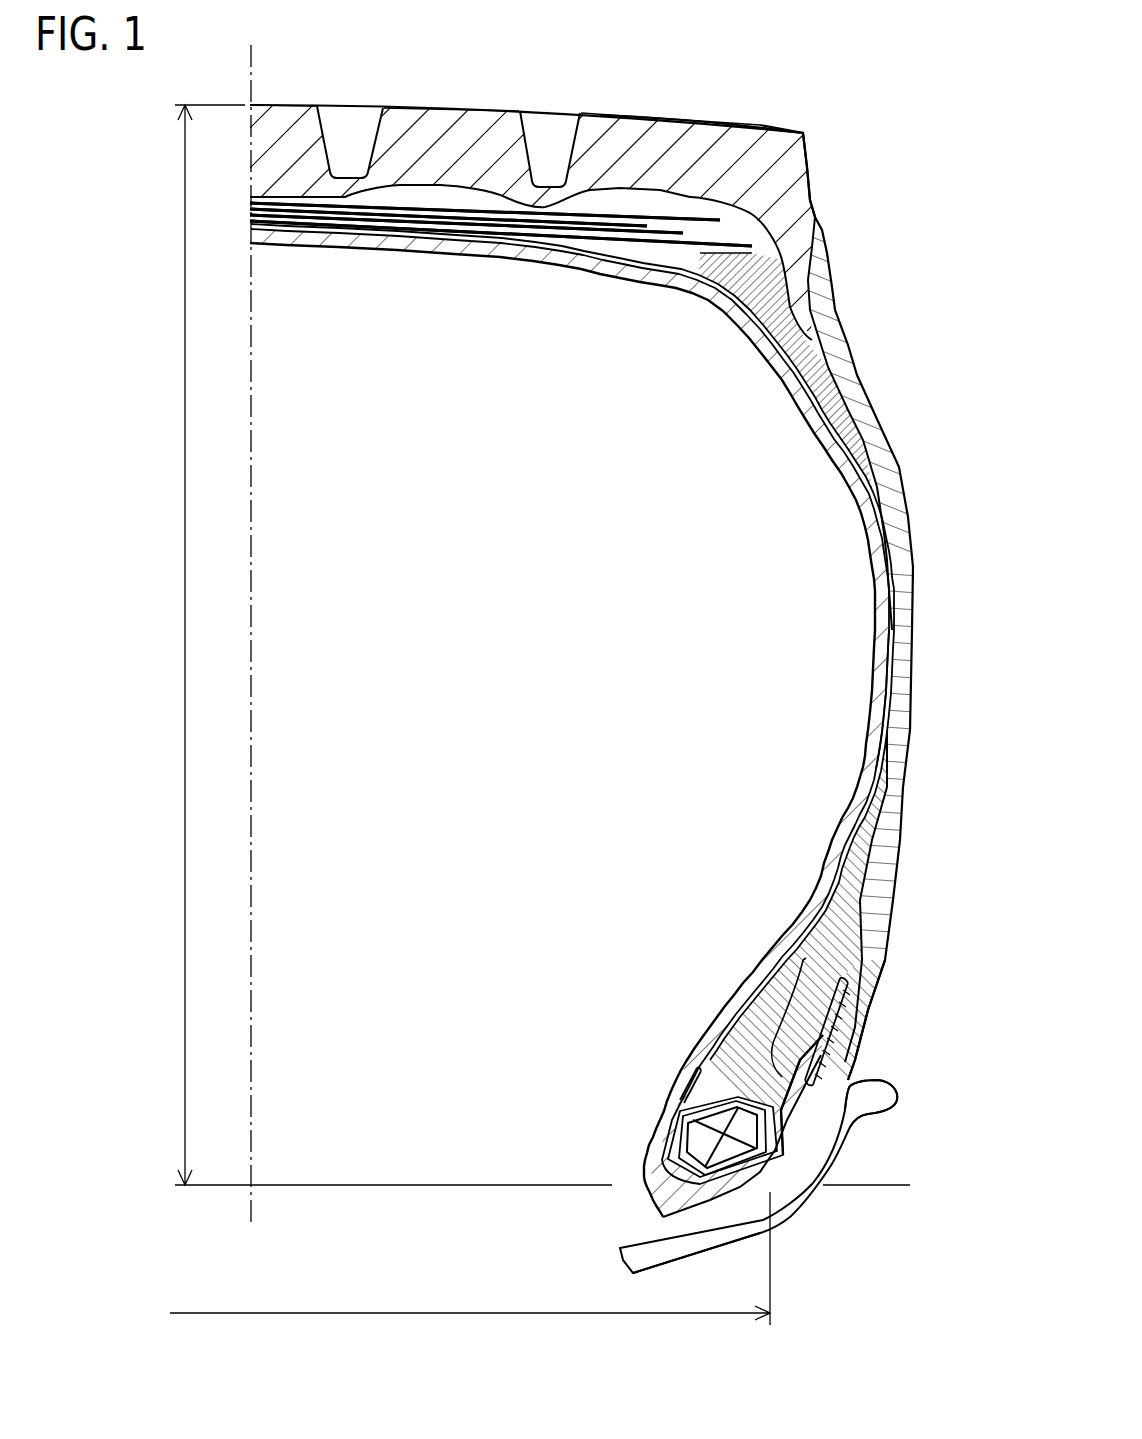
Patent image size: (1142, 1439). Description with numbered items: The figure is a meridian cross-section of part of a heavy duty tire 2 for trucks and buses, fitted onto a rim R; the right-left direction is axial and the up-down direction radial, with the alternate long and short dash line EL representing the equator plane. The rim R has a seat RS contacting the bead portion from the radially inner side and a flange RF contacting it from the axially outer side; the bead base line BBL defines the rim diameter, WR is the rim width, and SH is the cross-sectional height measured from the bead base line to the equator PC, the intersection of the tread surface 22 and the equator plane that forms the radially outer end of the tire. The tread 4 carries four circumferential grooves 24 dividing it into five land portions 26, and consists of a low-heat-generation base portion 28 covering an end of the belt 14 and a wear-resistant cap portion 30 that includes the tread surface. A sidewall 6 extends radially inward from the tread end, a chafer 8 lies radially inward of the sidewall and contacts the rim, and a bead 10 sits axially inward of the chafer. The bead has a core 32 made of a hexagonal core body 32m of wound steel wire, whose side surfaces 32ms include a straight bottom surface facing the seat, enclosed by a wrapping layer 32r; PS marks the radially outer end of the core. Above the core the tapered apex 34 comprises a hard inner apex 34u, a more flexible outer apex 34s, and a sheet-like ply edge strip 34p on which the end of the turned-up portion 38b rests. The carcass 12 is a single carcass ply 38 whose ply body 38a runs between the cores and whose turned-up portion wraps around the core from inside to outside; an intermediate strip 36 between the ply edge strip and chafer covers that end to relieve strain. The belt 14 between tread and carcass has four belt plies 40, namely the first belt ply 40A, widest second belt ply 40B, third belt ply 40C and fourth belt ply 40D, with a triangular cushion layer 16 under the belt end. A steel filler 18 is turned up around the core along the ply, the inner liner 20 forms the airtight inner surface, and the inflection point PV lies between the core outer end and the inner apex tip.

The heavy duty tire 2 is at (886, 126).
The tread 4 is at (415, 112).
The sidewall 6 is at (895, 490).
The chafer 8 is at (858, 1060).
The bead 10 is at (553, 975).
The carcass 12 is at (538, 261).
The belt 14 is at (258, 310).
The cushion layer 16 is at (740, 288).
The steel filler 18 is at (662, 1207).
The inner liner 20 is at (649, 291).
The tread surface 22 is at (640, 118).
The circumferential groove 24 is at (327, 128).
The land portion 26 is at (292, 104).
The base portion 28 is at (740, 223).
The cap portion 30 is at (748, 134).
The core 32 is at (705, 1112).
The core body 32m is at (700, 1137).
The wrapping layer 32r is at (680, 1143).
The side surface 32ms is at (772, 1215).
The apex 34 is at (596, 935).
The outer apex 34s is at (817, 953).
The ply edge strip 34p is at (750, 1047).
The inner apex 34u is at (805, 1042).
The intermediate strip 36 is at (841, 990).
The carcass ply 38 is at (570, 706).
The ply body 38a is at (870, 760).
The turned-up portion 38b is at (826, 1034).
The belt ply 40 is at (450, 207).
The first belt ply 40A is at (501, 267).
The second belt ply 40B is at (466, 264).
The third belt ply 40C is at (448, 261).
The fourth belt ply 40D is at (485, 258).
The point of intersection PC is at (245, 104).
The equator plane EL is at (255, 535).
The cross-sectional height SH is at (171, 645).
The bead base line BBL is at (323, 1187).
The rim width WR is at (470, 1258).
The inflection point PV is at (755, 1008).
The radially outer end of the core PS is at (693, 1108).
The flange RF is at (832, 1138).
The rim R is at (811, 1197).
The seat RS is at (700, 1237).